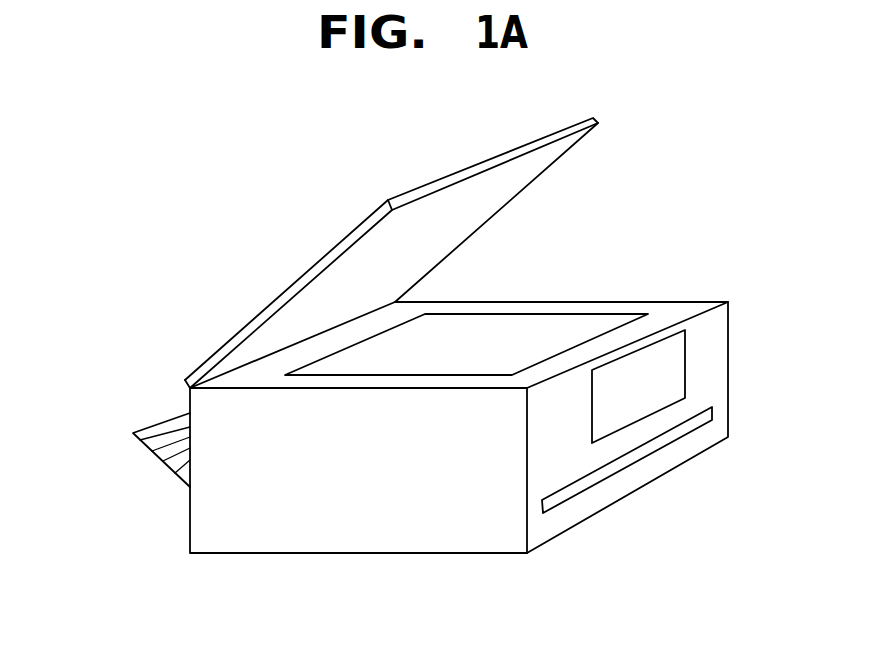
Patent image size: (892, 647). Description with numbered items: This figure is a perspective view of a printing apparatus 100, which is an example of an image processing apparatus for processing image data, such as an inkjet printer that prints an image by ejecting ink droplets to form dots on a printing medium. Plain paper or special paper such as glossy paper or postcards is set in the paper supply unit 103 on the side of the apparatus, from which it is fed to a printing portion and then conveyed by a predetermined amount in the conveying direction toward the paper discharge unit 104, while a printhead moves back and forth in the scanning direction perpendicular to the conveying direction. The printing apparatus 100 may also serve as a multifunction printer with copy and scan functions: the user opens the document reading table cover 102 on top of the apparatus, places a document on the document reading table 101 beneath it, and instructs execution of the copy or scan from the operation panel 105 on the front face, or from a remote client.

The printing apparatus 100 is at (322, 555).
The document reading table 101 is at (555, 323).
The document reading table cover 102 is at (307, 272).
The paper supply unit 103 is at (150, 447).
The paper discharge unit 104 is at (705, 415).
The operation panel 105 is at (687, 358).